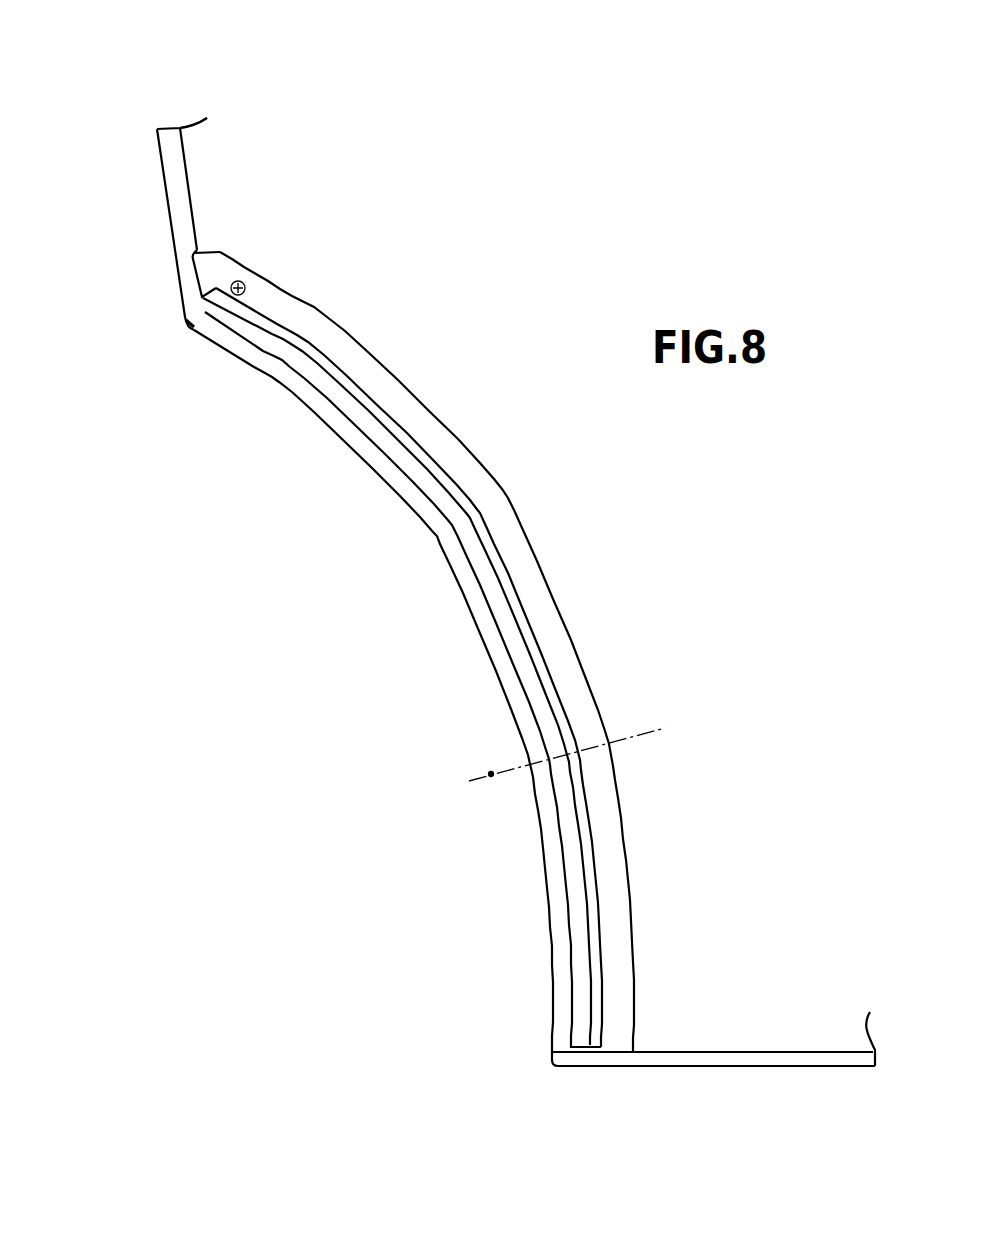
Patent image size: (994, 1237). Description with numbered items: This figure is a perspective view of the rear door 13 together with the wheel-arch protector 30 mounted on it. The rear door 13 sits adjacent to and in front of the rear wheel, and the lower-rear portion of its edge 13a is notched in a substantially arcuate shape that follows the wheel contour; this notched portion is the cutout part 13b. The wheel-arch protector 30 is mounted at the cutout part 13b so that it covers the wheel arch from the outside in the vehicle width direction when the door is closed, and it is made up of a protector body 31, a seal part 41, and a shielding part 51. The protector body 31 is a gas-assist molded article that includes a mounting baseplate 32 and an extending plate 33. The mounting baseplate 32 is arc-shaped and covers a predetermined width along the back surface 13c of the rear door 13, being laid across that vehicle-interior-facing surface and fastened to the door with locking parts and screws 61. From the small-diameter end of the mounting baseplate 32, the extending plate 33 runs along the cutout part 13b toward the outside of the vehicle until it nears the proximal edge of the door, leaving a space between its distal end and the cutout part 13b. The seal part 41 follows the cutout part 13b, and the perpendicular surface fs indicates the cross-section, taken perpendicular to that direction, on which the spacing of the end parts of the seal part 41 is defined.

The rear door 13 is at (150, 191).
The edge of the rear door 13a is at (177, 230).
The cutout part 13b is at (198, 333).
The back surface of the rear door 13c is at (240, 144).
The wheel-arch protector 30 is at (534, 659).
The protector body 31 is at (402, 667).
The mounting baseplate 32 is at (445, 447).
The extending plate 33 is at (377, 438).
The seal part 41 is at (490, 553).
The shielding part 51 is at (296, 395).
The screw 61 is at (244, 283).
The perpendicular surface fs is at (491, 774).